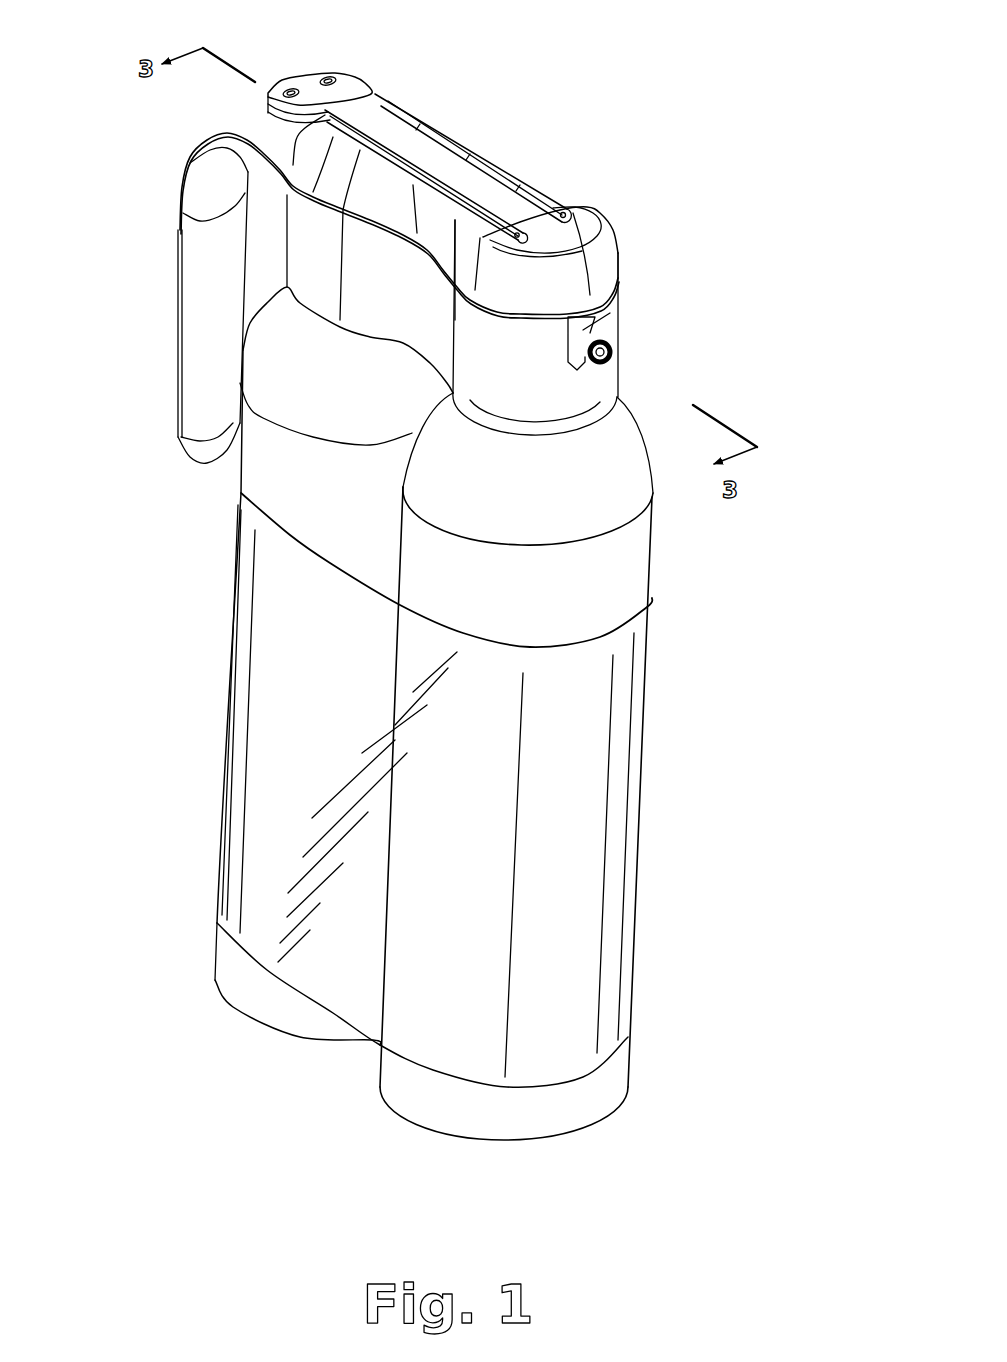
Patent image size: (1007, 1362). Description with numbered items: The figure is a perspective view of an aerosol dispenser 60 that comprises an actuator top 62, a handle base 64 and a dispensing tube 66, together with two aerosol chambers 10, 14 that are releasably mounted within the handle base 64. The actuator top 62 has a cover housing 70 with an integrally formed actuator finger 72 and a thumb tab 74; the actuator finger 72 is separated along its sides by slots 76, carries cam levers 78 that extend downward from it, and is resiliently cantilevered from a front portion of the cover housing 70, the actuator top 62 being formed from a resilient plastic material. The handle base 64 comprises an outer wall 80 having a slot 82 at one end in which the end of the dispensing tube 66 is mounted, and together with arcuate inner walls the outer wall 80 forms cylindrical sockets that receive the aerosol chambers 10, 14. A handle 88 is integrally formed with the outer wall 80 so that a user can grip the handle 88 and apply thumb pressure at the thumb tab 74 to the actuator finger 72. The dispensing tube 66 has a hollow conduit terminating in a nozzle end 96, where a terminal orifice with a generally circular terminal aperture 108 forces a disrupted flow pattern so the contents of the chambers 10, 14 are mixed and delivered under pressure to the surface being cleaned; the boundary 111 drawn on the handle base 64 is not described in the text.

The aerosol chamber 10 is at (617, 482).
The aerosol chamber 14 is at (284, 383).
The aerosol dispenser 60 is at (632, 306).
The actuator top 62 is at (577, 221).
The handle base 64 is at (596, 390).
The dispensing tube 66 is at (583, 330).
The cover housing 70 is at (580, 277).
The actuator finger 72 is at (412, 136).
The thumb tab 74 is at (308, 88).
The slots 76 is at (541, 197).
The cam levers 78 is at (496, 229).
The outer wall 80 is at (556, 413).
The slot 82 is at (580, 372).
The handle 88 is at (197, 265).
The nozzle end 96 is at (613, 348).
The terminal aperture 108 is at (614, 354).
The sleeve lower edge 111 is at (325, 562).